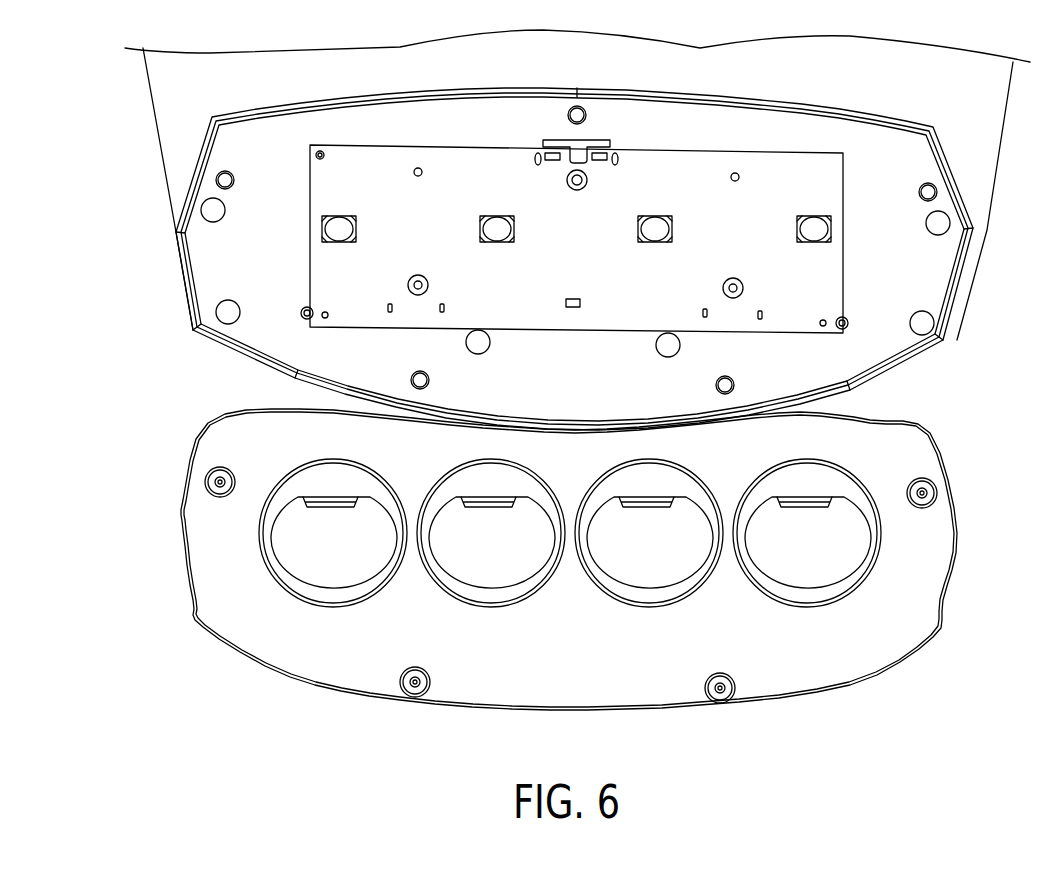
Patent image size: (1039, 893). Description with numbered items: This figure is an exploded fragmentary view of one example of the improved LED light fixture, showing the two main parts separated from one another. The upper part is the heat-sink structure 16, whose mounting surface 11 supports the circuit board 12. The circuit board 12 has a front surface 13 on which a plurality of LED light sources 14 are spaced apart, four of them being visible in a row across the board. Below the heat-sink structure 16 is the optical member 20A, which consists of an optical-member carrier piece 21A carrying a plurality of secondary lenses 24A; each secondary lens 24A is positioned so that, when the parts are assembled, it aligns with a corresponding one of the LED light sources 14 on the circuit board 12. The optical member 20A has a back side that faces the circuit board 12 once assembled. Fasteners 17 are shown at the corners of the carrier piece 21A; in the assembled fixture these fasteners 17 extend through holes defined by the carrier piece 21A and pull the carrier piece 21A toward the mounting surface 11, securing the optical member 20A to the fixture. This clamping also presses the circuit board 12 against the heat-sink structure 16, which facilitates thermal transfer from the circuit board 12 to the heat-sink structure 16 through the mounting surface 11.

The mounting surface 11 is at (937, 277).
The circuit board 12 is at (842, 283).
The front surface 13 is at (587, 251).
The LED light sources 14 is at (495, 228).
The heat-sink structure 16 is at (188, 158).
The fasteners 17 is at (210, 471).
The optical member 20A is at (923, 575).
The optical-member carrier piece 21A is at (217, 563).
The secondary lenses 24A is at (488, 562).